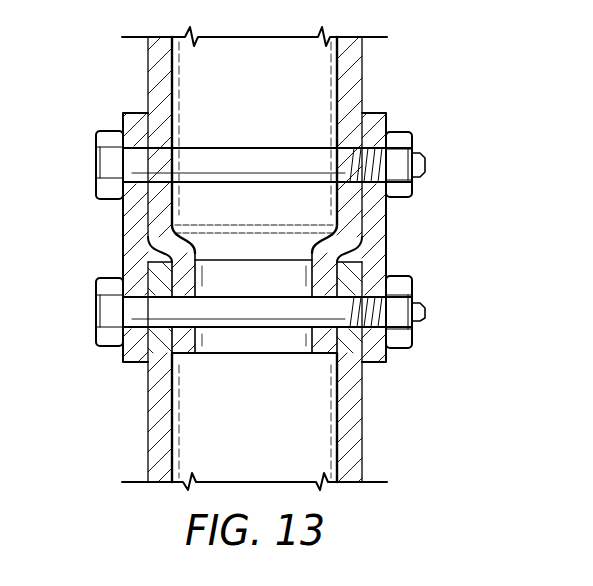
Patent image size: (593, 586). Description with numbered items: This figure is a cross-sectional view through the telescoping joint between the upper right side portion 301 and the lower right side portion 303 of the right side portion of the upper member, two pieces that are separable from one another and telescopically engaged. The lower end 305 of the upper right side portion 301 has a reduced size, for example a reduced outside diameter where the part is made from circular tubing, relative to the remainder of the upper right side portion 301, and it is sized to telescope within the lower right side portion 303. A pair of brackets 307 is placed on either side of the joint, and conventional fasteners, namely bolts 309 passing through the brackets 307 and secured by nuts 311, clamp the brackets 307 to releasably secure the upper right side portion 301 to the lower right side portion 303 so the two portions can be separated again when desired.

The upper right side portion 301 is at (148, 92).
The lower right side portion 303 is at (362, 440).
The lower end 305 is at (293, 355).
The brackets 307 is at (123, 253).
The bolts 309 is at (96, 165).
The nuts 311 is at (398, 132).